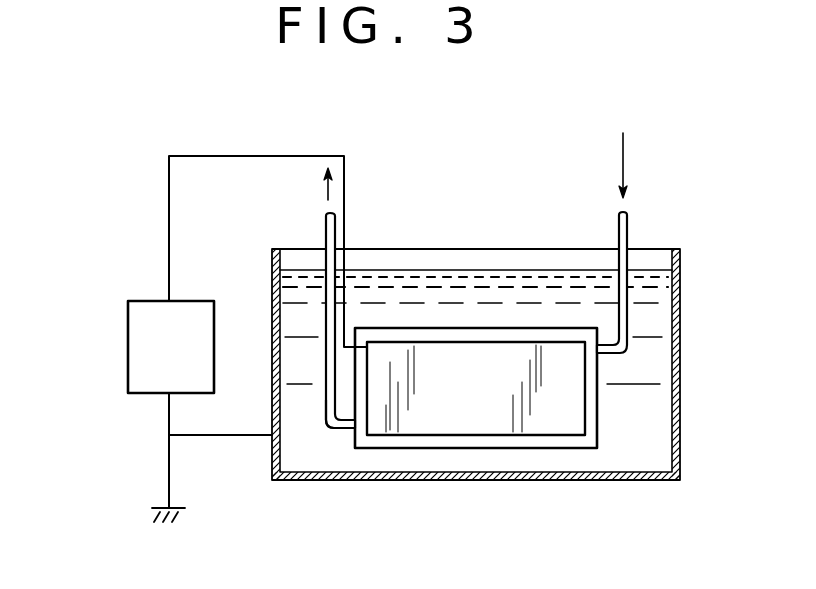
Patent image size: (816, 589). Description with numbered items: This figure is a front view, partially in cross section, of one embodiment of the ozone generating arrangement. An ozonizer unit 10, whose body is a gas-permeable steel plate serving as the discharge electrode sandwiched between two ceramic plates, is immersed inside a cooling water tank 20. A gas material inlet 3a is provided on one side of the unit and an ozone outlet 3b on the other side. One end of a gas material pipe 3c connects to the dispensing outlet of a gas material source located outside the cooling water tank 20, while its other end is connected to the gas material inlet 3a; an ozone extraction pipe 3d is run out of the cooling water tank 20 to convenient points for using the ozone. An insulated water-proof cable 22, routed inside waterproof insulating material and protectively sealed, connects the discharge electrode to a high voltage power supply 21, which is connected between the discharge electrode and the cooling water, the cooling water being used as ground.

The gas material inlet 3a is at (600, 362).
The ozone outlet 3b is at (350, 436).
The gas material pipe 3c is at (618, 245).
The ozone extraction pipe 3d is at (334, 243).
The ozonizer unit 10 is at (484, 397).
The cooling water tank 20 is at (412, 481).
The high voltage power supply 21 is at (128, 345).
The insulated water-proof cable 22 is at (264, 156).